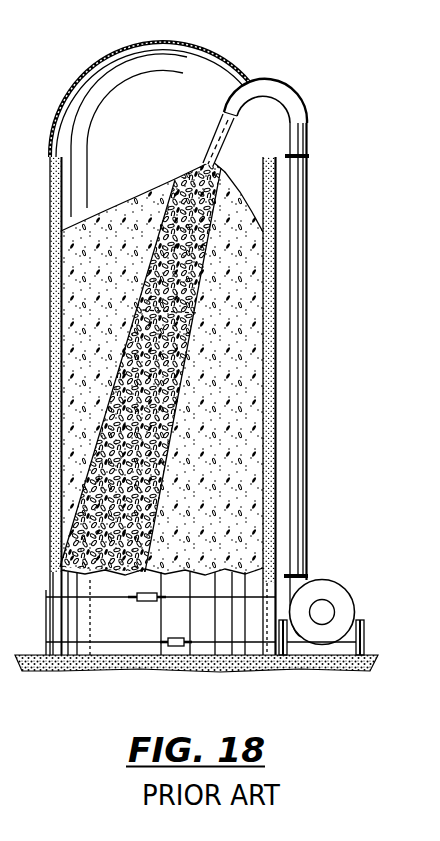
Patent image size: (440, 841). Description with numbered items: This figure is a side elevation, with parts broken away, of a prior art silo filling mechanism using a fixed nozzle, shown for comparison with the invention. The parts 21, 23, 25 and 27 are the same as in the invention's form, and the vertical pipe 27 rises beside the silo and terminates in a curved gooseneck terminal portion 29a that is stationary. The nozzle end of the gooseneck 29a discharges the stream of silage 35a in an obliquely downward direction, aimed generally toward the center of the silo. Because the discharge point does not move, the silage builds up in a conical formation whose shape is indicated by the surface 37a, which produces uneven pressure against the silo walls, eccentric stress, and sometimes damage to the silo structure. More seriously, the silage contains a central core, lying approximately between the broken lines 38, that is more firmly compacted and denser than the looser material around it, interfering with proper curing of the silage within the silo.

The silo filling mechanism part 21 is at (50, 297).
The dome roof 23 is at (115, 53).
The blower 25 is at (346, 590).
The vertical pipe 27 is at (305, 352).
The gooseneck terminal portion 29a is at (300, 100).
The stream of silage 35a is at (210, 146).
The surface 37a is at (124, 197).
The broken lines 38 is at (157, 500).